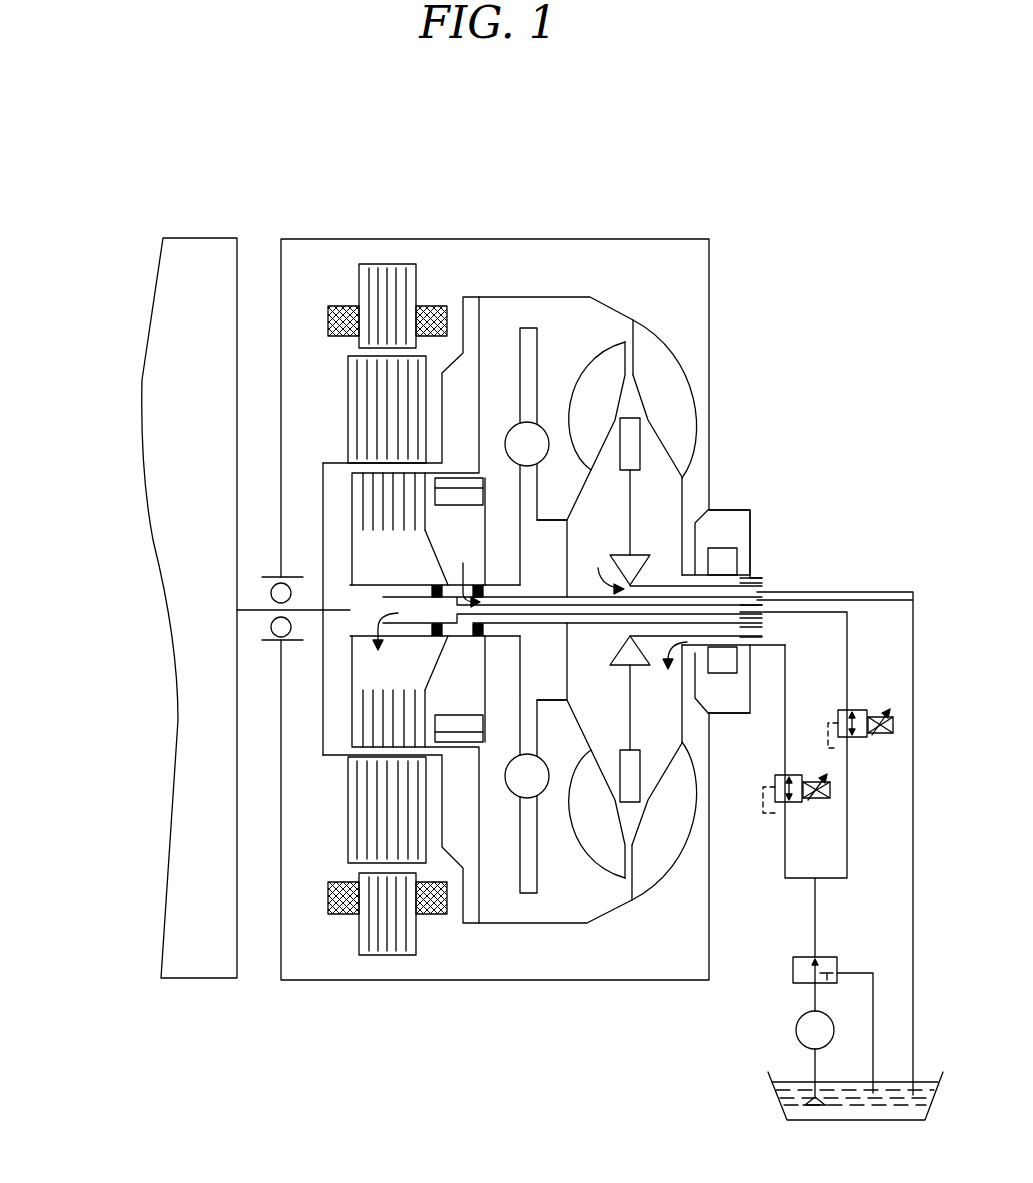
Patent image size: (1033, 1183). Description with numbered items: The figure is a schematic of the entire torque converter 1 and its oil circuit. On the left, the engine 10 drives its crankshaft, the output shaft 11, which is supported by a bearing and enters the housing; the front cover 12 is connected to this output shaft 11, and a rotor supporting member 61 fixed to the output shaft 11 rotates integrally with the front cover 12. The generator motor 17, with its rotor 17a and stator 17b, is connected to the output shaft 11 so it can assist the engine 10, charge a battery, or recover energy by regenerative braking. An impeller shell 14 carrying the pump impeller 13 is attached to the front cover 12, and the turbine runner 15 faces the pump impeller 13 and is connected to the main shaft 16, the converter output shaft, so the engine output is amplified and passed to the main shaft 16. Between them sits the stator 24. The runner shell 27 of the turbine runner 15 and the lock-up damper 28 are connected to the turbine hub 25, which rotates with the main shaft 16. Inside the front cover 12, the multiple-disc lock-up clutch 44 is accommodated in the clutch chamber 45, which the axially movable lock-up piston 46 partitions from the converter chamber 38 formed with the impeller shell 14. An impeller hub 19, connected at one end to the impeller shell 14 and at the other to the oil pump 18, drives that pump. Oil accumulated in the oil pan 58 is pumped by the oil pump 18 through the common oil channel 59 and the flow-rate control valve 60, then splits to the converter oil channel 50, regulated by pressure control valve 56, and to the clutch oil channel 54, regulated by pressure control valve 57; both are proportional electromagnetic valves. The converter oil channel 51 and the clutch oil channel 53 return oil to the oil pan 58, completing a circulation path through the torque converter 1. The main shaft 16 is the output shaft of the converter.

The torque converter 1 is at (530, 228).
The engine 10 is at (193, 250).
The output shaft 11 is at (255, 608).
The front cover 12 is at (348, 677).
The pump impeller 13 is at (677, 420).
The impeller shell 14 is at (663, 357).
The turbine runner 15 is at (593, 377).
The main shaft 16 is at (398, 595).
The generator motor 17 is at (244, 609).
The rotor 17a is at (362, 378).
The stator 17b is at (372, 325).
The oil pump 18 is at (730, 556).
The impeller hub 19 is at (682, 497).
The stator 24 is at (630, 707).
The turbine hub 25 is at (565, 636).
The runner shell 27 is at (580, 843).
The lock-up damper 28 is at (508, 803).
The converter chamber 38 is at (674, 703).
The lock-up clutch 44 is at (348, 735).
The clutch chamber 45 is at (372, 680).
The lock-up piston 46 is at (483, 690).
The converter oil channel 50 is at (782, 683).
The converter oil channel 51 is at (863, 590).
The clutch oil channel 53 is at (883, 602).
The clutch oil channel 54 is at (818, 615).
The pressure control valve 56 is at (793, 802).
The pressure control valve 57 is at (858, 737).
The oil pan 58 is at (843, 1110).
The common oil channel 59 is at (813, 918).
The flow-rate control valve 60 is at (793, 970).
The rotor supporting member 61 is at (323, 700).